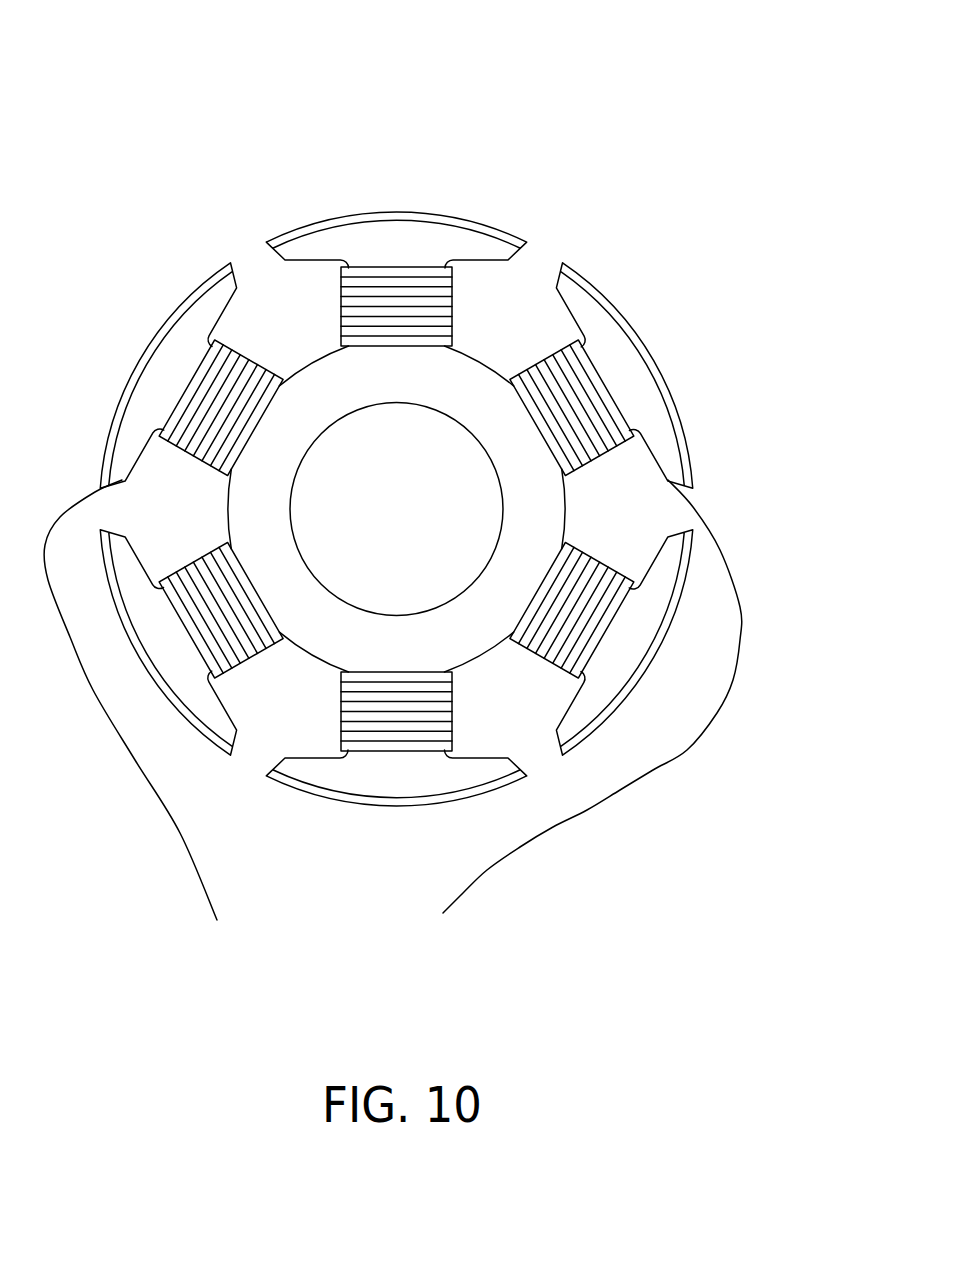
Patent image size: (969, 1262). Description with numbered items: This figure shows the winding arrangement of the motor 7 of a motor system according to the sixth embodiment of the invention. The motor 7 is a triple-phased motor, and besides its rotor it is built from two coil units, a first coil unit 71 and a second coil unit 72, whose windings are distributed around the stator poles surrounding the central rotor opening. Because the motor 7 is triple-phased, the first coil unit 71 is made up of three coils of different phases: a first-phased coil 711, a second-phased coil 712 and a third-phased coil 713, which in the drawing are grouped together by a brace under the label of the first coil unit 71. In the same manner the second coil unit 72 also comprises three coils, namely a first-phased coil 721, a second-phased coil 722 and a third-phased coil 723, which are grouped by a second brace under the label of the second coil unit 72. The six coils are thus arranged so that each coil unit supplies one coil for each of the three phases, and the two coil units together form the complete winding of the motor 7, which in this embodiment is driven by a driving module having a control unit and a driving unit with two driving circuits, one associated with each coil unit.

The motor 7 is at (548, 235).
The first coil unit 71 is at (450, 48).
The first-phased coil 711 is at (400, 290).
The second-phased coil 712 is at (238, 590).
The third-phased coil 713 is at (550, 582).
The second coil unit 72 is at (463, 967).
The first-phased coil 721 is at (384, 748).
The second-phased coil 722 is at (572, 716).
The third-phased coil 723 is at (143, 720).